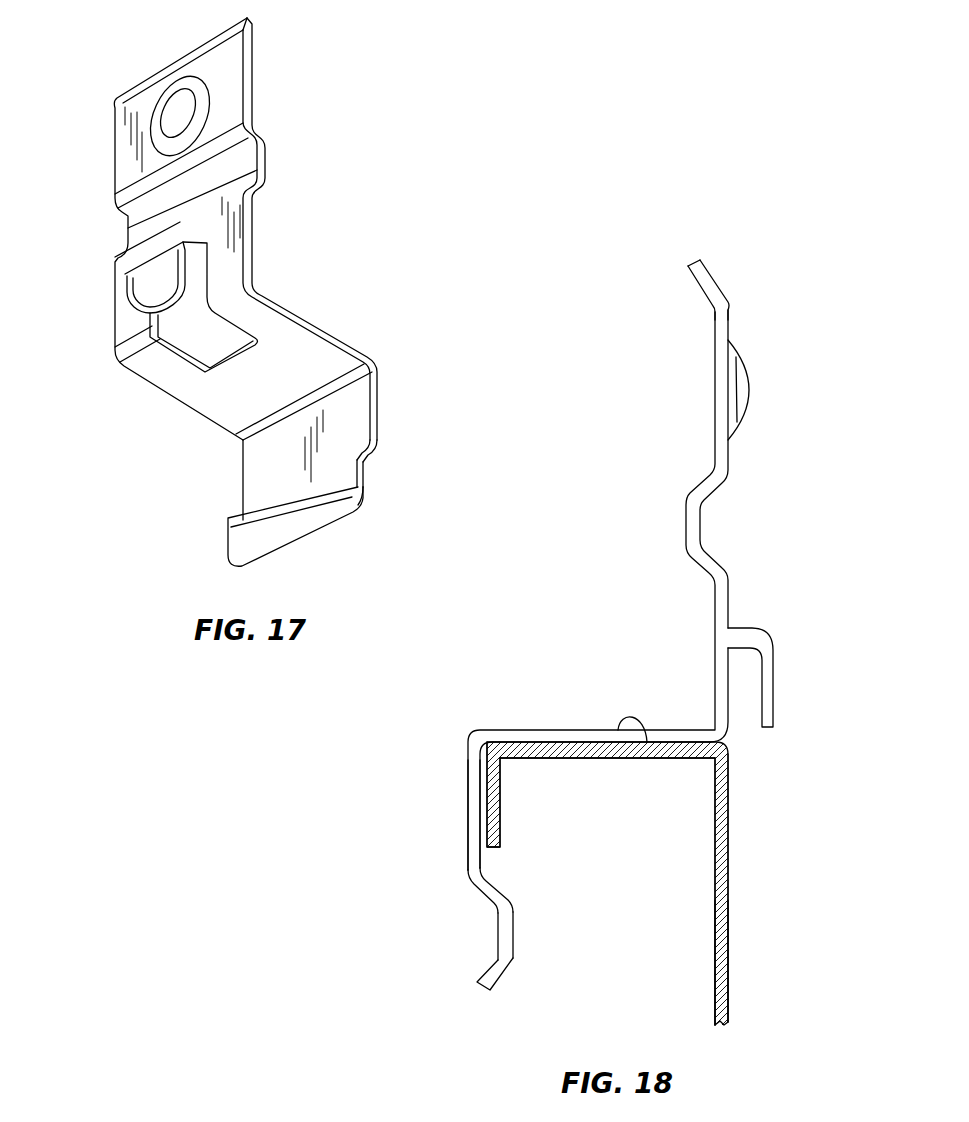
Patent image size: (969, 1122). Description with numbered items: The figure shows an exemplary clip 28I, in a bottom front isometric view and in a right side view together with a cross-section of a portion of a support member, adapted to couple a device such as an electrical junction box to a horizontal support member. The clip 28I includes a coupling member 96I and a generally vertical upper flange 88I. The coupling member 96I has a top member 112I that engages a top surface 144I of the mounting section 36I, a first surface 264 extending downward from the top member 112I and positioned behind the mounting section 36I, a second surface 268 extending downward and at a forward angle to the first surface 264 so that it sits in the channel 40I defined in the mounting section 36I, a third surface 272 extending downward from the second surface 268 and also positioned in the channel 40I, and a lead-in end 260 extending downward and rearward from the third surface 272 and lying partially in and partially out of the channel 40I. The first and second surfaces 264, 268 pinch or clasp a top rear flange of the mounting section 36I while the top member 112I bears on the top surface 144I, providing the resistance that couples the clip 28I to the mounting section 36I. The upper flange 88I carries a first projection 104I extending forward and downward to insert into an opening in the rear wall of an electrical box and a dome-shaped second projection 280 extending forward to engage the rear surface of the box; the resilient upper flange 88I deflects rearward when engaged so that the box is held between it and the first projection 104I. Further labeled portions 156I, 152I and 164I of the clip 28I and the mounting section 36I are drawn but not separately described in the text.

In FIG. 17, the clip 28I is at (97, 115).
In FIG. 18, the clip 28I is at (814, 356).
In FIG. 17, the upper flange 88I is at (254, 80).
In FIG. 18, the upper flange 88I is at (704, 318).
In FIG. 17, the upper portion of first leg 156I is at (136, 167).
In FIG. 18, the upper portion of first leg 156I is at (729, 322).
In FIG. 17, the second projection 280 is at (173, 106).
In FIG. 18, the second projection 280 is at (743, 397).
In FIG. 17, the first projection 104I is at (147, 290).
In FIG. 18, the first projection 104I is at (775, 701).
In FIG. 17, the top member 112I is at (303, 349).
In FIG. 18, the top member 112I is at (545, 730).
In FIG. 17, the coupling member 96I is at (392, 382).
In FIG. 18, the coupling member 96I is at (470, 900).
In FIG. 17, the first surface 264 is at (383, 411).
In FIG. 18, the first surface 264 is at (470, 833).
In FIG. 17, the second surface 268 is at (373, 456).
In FIG. 18, the second surface 268 is at (498, 884).
In FIG. 17, the third surface 272 is at (366, 473).
In FIG. 18, the third surface 272 is at (513, 933).
In FIG. 17, the lead-in end 260 is at (347, 510).
In FIG. 18, the lead-in end 260 is at (487, 968).
In FIG. 18, the channel 40I is at (582, 987).
In FIG. 18, the first flange 152I is at (493, 793).
In FIG. 18, the second flange / wall 164I is at (729, 823).
In FIG. 18, the mounting section 36I is at (737, 911).
In FIG. 18, the top surface 144I is at (647, 742).